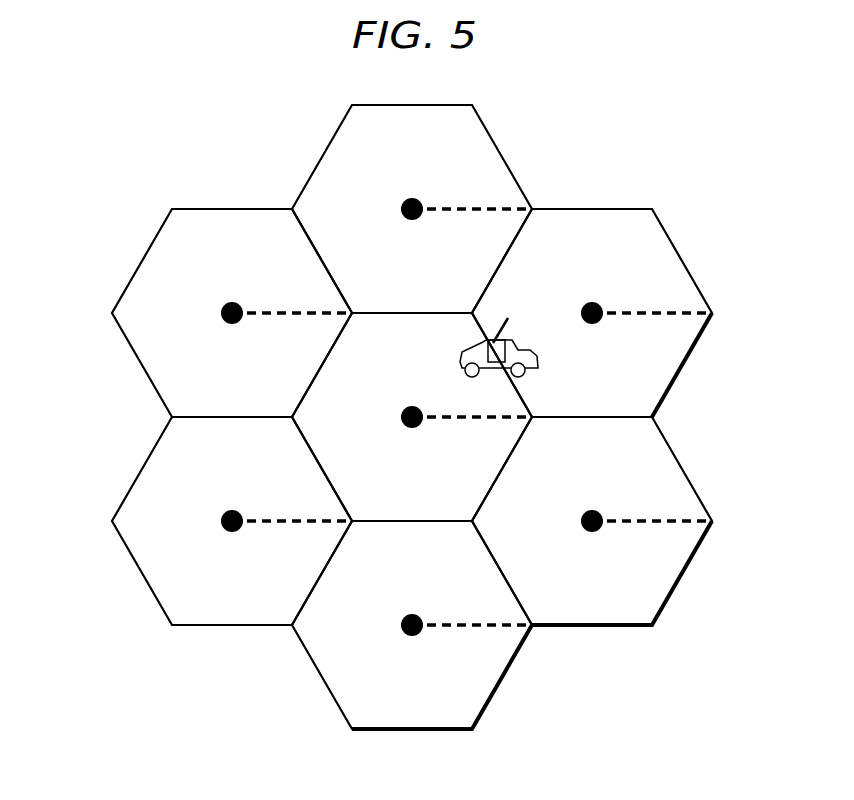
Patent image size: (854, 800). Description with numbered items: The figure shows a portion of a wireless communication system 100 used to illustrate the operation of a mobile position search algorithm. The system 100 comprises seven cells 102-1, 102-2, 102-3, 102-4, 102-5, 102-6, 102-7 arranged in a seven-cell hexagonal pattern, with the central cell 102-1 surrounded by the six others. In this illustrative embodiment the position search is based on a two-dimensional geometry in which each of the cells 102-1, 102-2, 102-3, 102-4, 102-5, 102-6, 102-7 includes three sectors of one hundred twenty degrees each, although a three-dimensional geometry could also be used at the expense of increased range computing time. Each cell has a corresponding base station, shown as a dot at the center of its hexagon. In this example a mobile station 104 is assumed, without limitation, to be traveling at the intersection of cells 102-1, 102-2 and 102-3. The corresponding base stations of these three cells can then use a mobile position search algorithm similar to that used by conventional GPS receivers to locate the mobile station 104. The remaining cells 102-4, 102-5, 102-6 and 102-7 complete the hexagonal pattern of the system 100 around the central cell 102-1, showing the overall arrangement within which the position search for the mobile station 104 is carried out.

The wireless communication system 100 is at (158, 128).
The cell 102-1 is at (440, 490).
The cell 102-2 is at (682, 368).
The cell 102-3 is at (327, 150).
The cell 102-4 is at (139, 360).
The cell 102-5 is at (140, 570).
The cell 102-6 is at (325, 683).
The cell 102-7 is at (600, 625).
The mobile station 104 is at (530, 356).